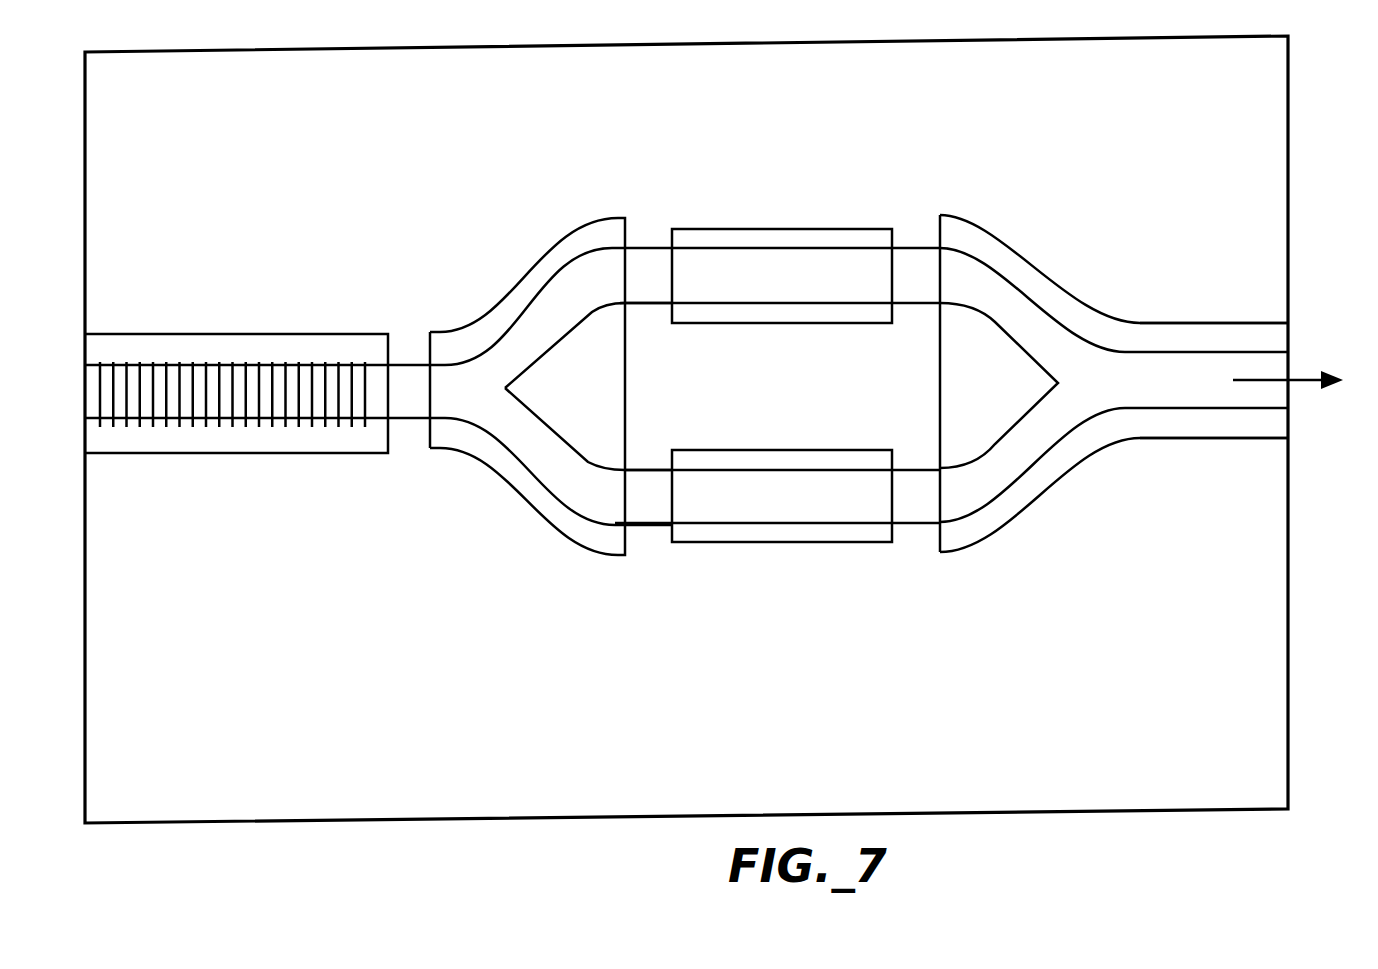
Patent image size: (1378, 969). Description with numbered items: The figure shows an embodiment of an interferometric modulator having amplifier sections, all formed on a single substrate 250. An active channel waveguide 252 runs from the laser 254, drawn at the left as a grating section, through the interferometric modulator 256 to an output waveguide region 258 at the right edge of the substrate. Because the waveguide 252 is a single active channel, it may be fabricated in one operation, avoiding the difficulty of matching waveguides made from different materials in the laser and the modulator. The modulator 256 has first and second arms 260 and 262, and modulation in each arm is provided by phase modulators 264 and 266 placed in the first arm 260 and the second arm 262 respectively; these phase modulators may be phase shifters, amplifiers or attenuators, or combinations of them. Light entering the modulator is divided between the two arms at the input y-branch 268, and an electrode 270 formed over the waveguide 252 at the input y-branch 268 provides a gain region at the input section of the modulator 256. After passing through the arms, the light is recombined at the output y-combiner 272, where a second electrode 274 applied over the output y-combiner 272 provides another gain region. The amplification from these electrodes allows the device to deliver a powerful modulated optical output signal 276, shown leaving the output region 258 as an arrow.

The substrate 250 is at (205, 63).
The active channel waveguide 252 is at (410, 408).
The laser 254 is at (233, 442).
The interferometric modulator 256 is at (727, 62).
The output waveguide region 258 is at (1273, 396).
The first arm 260 is at (652, 262).
The second arm 262 is at (652, 515).
The phase modulator 264 is at (785, 227).
The phase modulator 266 is at (782, 543).
The input y-branch 268 is at (495, 395).
The electrode 270 is at (500, 278).
The output y-combiner 272 is at (1068, 390).
The second electrode 274 is at (1073, 282).
The modulated optical output signal 276 is at (1300, 380).